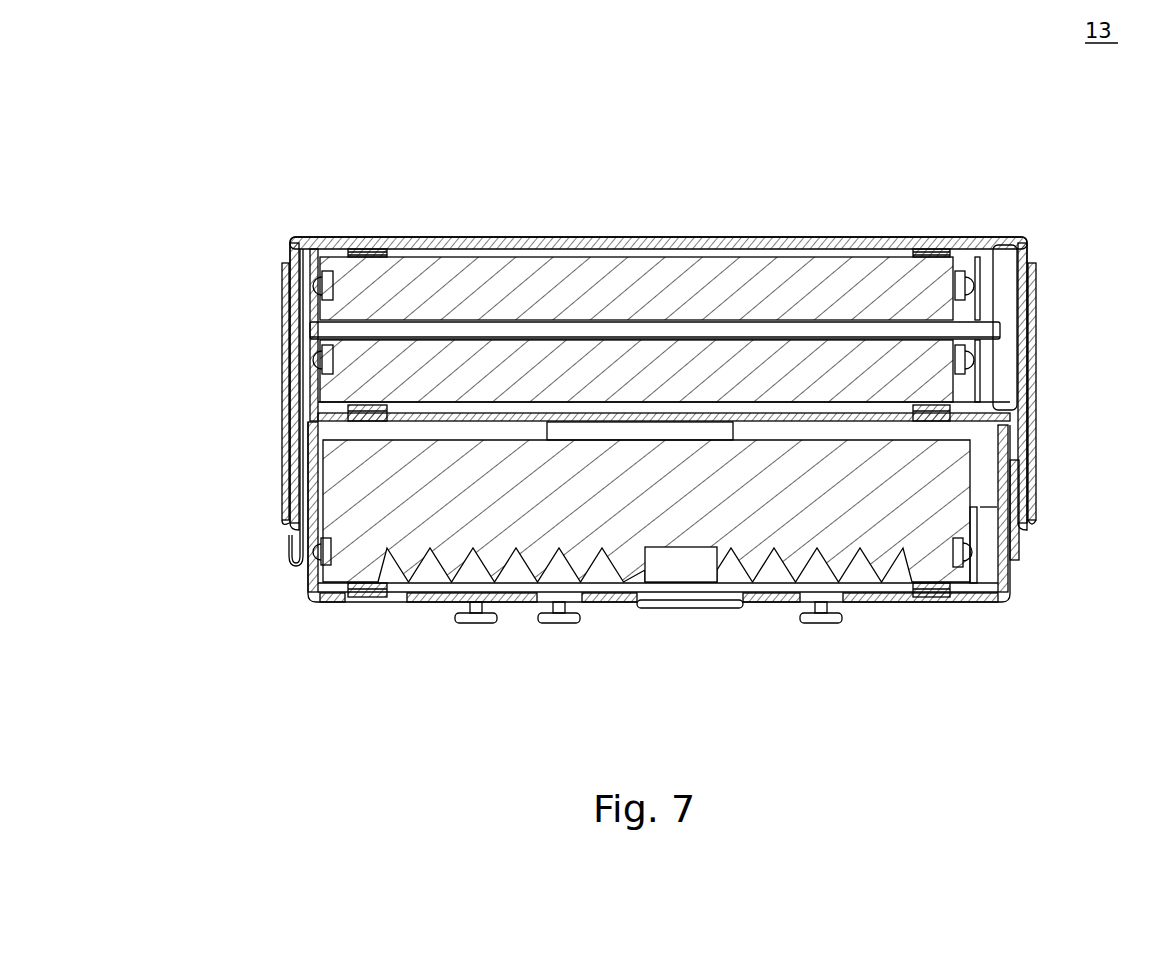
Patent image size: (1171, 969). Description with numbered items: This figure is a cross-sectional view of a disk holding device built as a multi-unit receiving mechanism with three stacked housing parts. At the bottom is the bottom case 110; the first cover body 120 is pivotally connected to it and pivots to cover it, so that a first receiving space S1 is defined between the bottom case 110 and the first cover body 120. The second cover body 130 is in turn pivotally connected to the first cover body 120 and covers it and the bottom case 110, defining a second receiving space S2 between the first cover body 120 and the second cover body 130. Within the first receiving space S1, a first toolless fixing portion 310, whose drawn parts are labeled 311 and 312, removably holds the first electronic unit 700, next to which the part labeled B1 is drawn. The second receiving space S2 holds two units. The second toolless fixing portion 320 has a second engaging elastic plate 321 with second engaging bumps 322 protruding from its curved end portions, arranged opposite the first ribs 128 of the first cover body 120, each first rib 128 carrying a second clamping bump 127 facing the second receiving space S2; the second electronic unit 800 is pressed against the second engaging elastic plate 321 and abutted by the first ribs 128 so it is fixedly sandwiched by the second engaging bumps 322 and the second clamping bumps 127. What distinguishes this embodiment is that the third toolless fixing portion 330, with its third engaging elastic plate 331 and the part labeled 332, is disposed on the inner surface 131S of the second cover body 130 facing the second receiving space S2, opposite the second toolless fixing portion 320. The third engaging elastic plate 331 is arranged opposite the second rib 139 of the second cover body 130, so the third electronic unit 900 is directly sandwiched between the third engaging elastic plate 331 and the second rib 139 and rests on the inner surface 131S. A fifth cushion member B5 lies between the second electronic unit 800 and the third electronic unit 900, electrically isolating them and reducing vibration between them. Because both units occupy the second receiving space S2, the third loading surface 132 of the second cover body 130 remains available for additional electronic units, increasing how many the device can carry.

The bottom case 110 is at (690, 606).
The first cover body 120 is at (650, 416).
The second clamping bump 127 is at (301, 384).
The first rib 128 is at (286, 420).
The second cover body 130 is at (820, 240).
The inner surface 131S is at (452, 249).
The third loading surface 132 is at (884, 240).
The second rib 139 is at (313, 252).
The first electronic unit 700 is at (850, 540).
The second electronic unit 800 is at (318, 357).
The third electronic unit 900 is at (316, 301).
The first toolless fixing portion 310 is at (1057, 546).
The connector sheet 311 is at (976, 576).
The connector ball contact 312 is at (968, 552).
The second toolless fixing portion 320 is at (1058, 357).
The second engaging elastic plate 321 is at (988, 352).
The second engaging bump 322 is at (972, 373).
The third toolless fixing portion 330 is at (1058, 274).
The third engaging elastic plate 331 is at (980, 266).
The connector ball contact 332 is at (974, 287).
The first board B1 is at (563, 435).
The fifth cushion member B5 is at (720, 330).
The first receiving space S1 is at (990, 481).
The second receiving space S2 is at (300, 326).